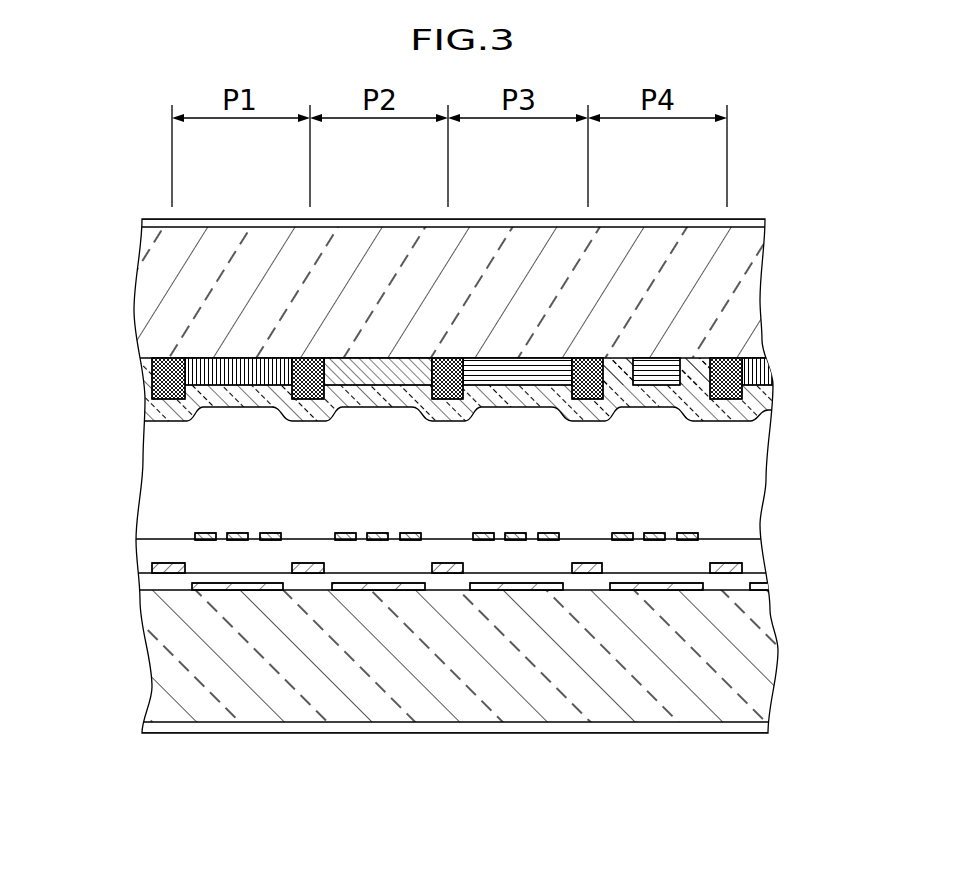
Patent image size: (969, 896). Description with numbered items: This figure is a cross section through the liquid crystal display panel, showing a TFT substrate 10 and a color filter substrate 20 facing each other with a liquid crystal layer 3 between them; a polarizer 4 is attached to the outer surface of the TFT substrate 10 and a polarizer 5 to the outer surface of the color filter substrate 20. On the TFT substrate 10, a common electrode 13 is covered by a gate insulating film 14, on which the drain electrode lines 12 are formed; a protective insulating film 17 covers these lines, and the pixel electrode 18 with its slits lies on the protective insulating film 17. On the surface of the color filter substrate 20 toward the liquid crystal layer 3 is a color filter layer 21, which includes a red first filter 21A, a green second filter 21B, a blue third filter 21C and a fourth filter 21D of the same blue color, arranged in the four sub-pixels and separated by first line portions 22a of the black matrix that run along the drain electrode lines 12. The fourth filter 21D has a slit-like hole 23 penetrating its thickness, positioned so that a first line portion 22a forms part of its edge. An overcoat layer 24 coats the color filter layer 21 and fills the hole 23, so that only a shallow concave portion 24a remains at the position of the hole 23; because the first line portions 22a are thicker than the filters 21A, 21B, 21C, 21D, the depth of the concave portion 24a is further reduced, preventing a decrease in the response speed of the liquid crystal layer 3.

The liquid crystal layer 3 is at (757, 503).
The polarizer 4 is at (757, 727).
The polarizer 5 is at (758, 224).
The TFT substrate 10 is at (765, 655).
The drain electrode line 12 is at (169, 573).
The common electrode 13 is at (243, 590).
The gate insulating film 14 is at (750, 578).
The protective insulating film 17 is at (745, 552).
The pixel electrode 18 is at (272, 532).
The color filter substrate 20 is at (745, 283).
The color filter layer 21 is at (408, 413).
The first filter 21A is at (240, 370).
The second filter 21B is at (384, 370).
The third filter 21C is at (520, 372).
The fourth filter 21D is at (662, 375).
The first line portion 22a is at (170, 383).
The hole 23 is at (617, 372).
The overcoat layer 24 is at (760, 394).
The concave portion 24a is at (693, 421).